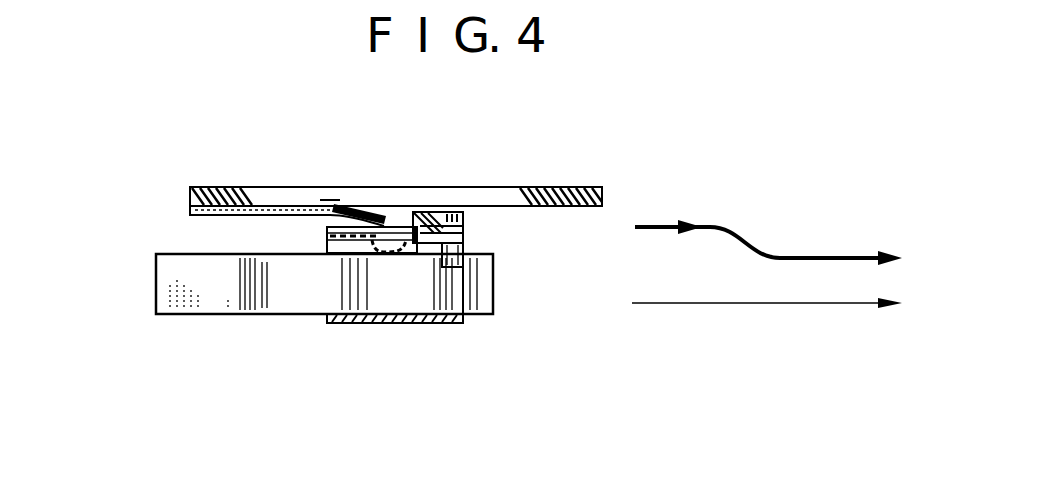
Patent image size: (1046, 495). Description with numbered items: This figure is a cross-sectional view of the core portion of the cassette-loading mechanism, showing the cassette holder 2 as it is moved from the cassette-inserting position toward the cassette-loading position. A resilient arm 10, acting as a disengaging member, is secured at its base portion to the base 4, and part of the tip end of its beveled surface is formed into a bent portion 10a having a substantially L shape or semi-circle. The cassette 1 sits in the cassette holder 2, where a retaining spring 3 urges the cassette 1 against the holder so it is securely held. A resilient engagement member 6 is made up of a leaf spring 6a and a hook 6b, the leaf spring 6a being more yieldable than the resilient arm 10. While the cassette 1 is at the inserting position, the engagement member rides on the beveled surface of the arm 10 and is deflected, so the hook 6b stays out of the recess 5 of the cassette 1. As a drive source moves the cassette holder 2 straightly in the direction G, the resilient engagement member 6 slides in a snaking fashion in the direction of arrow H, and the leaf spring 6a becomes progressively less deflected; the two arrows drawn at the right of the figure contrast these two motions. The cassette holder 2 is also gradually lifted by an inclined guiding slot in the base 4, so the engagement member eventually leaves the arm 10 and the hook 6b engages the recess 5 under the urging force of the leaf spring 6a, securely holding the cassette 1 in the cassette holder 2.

The cassette 1 is at (218, 304).
The cassette holder 2 is at (338, 323).
The retaining spring 3 is at (402, 256).
The base 4 is at (575, 187).
The recess 5 is at (463, 258).
The resilient engagement member 6 is at (462, 202).
The leaf spring 6a is at (404, 202).
The hook 6b is at (463, 238).
The resilient arm 10 is at (210, 188).
The bent portion 10a is at (380, 202).
The direction of arrow H is at (755, 242).
The direction G is at (745, 308).